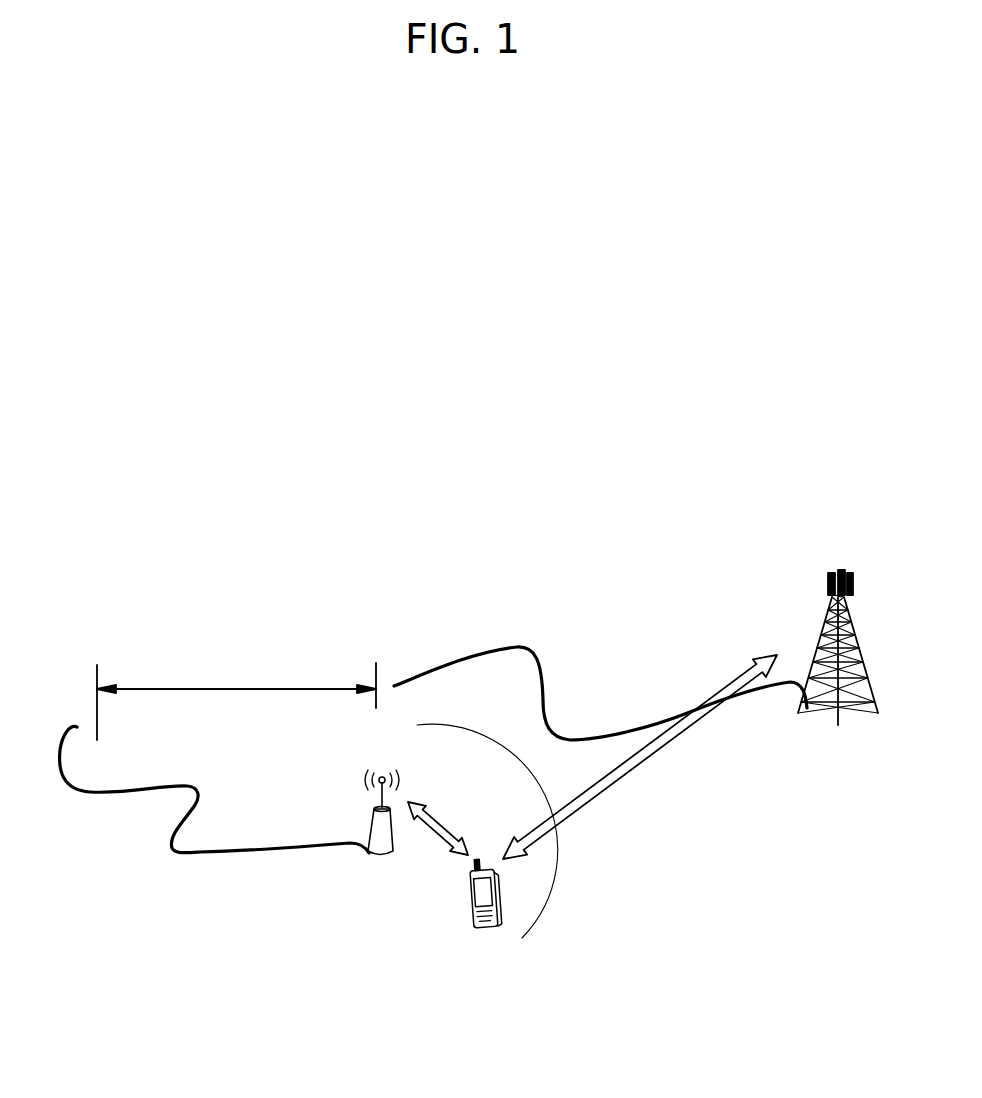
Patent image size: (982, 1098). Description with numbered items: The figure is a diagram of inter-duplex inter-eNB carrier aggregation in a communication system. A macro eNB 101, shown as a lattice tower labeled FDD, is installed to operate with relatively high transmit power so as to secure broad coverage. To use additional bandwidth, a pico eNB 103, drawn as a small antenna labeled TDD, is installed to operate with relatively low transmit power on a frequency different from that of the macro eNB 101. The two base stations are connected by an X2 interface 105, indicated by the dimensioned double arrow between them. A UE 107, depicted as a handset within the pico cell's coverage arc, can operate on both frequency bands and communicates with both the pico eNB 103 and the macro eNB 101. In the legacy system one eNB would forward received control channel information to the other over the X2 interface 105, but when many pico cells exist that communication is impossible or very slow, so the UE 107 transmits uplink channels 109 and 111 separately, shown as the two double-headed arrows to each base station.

The macro eNB 101 is at (823, 626).
The pico eNB 103 is at (372, 823).
The X2 interface 105 is at (251, 660).
The UE 107 is at (469, 918).
The uplink channel 109 is at (443, 820).
The uplink channel 111 is at (617, 788).